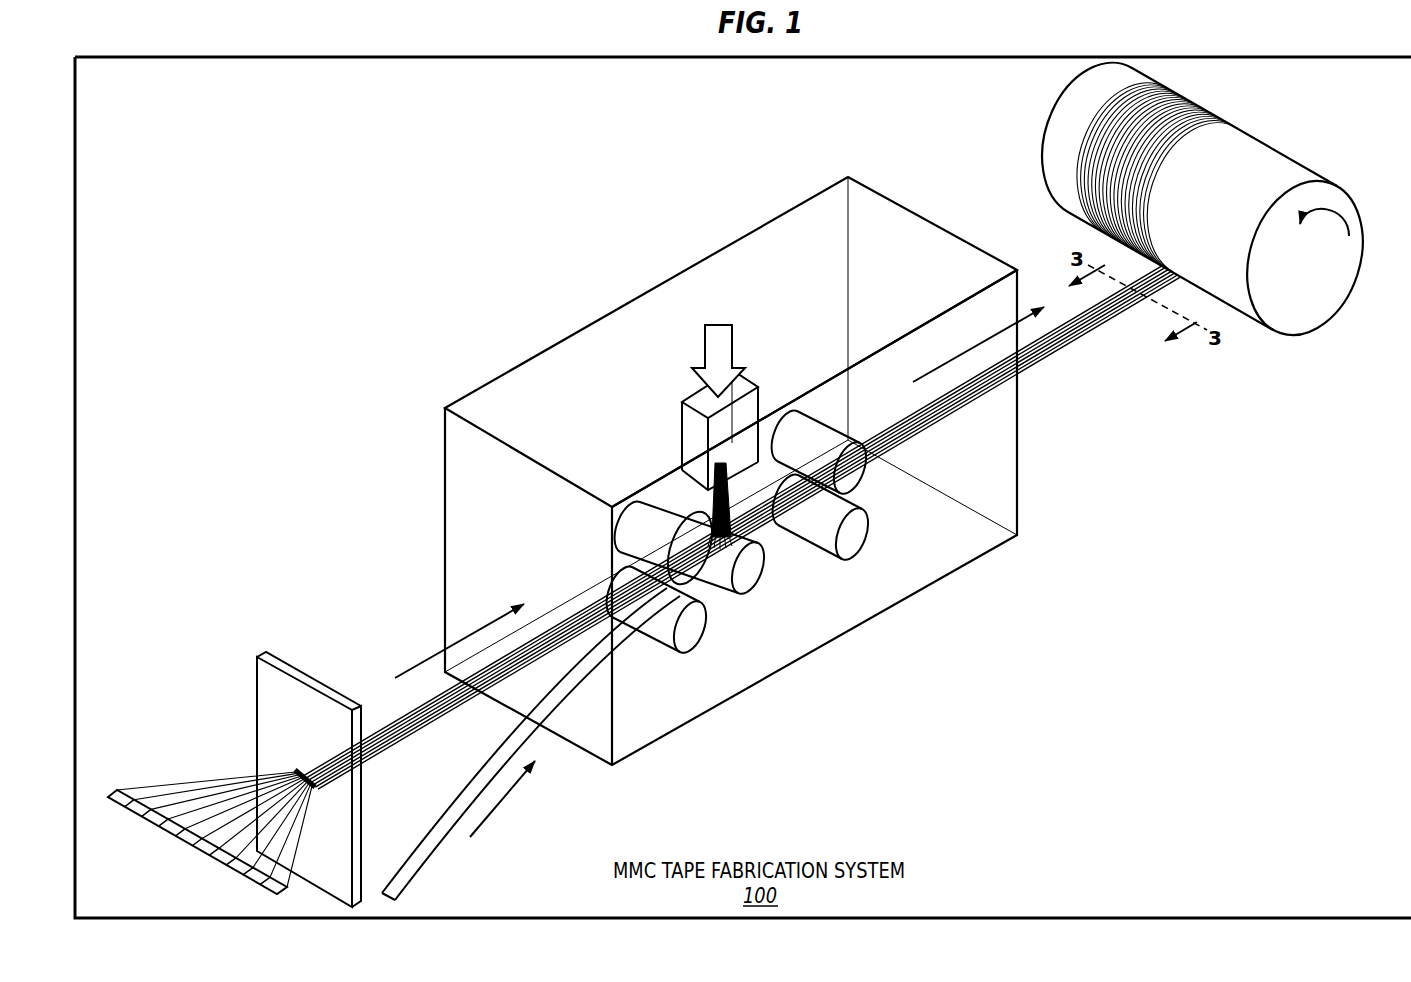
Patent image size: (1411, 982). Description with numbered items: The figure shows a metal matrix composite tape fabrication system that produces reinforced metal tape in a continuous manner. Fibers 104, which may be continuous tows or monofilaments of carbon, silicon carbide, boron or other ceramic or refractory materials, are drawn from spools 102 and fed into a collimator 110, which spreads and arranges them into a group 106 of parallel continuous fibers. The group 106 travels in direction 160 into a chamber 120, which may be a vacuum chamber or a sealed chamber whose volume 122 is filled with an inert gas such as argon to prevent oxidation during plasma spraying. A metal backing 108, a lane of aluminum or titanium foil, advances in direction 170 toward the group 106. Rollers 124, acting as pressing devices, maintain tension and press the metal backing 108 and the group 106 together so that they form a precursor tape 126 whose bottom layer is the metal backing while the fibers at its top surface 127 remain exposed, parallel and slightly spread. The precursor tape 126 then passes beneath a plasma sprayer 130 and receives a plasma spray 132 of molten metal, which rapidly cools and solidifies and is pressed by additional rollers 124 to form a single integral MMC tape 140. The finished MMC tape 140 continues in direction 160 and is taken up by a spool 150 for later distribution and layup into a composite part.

The spools 102 is at (189, 848).
The fibers 104 is at (196, 786).
The group of parallel continuous fibers 106 is at (396, 742).
The metal backing 108 is at (438, 850).
The collimator 110 is at (293, 669).
The chamber 120 is at (886, 190).
The volume 122 is at (940, 248).
The rollers 124 is at (852, 534).
The precursor tape 126 is at (726, 580).
The top surface 127 is at (707, 531).
The plasma sprayer 130 is at (752, 381).
The plasma spray 132 is at (707, 492).
The MMC tape 140 is at (1058, 366).
The spool 150 is at (1300, 153).
The direction 160 is at (425, 666).
The direction 170 is at (497, 805).